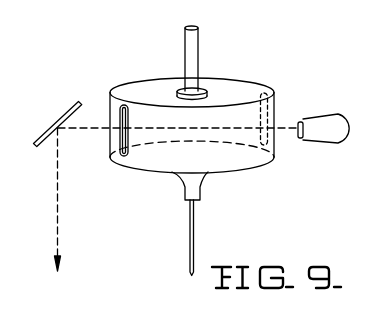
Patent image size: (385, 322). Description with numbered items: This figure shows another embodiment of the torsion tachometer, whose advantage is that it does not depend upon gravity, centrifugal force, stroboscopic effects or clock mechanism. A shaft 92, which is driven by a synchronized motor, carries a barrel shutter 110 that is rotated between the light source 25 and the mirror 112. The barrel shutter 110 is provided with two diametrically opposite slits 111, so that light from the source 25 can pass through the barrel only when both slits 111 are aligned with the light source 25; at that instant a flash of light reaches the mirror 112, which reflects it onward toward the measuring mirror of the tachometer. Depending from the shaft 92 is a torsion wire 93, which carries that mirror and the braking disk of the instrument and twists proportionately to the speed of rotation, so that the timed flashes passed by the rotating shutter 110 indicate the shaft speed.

The light source 25 is at (325, 120).
The shaft 92 is at (196, 53).
The torsion wire 93 is at (194, 226).
The barrel shutter 110 is at (224, 83).
The slits 111 is at (128, 124).
The mirror 112 is at (62, 114).